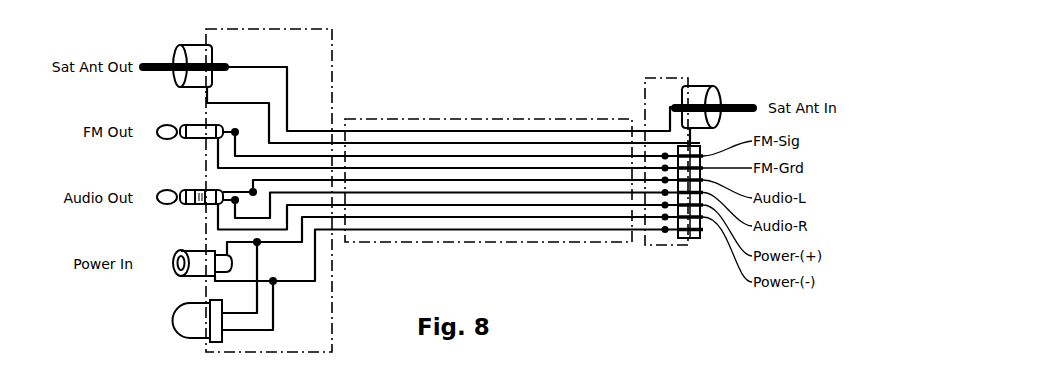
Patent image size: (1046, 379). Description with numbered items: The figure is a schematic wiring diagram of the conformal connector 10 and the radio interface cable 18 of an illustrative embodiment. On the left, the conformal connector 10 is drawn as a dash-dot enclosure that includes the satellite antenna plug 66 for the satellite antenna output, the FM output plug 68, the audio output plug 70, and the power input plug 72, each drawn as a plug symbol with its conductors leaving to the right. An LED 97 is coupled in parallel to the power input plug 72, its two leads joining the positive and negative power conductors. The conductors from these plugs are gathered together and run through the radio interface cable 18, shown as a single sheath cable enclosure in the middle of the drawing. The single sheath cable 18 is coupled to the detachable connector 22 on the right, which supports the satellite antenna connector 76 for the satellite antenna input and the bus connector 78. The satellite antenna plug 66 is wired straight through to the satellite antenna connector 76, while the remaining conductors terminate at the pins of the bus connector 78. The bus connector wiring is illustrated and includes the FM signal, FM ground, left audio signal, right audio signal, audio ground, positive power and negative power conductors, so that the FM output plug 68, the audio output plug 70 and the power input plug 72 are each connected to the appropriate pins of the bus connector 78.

The conformal connector 10 is at (332, 65).
The radio interface cable 18 is at (501, 118).
The detachable connector 22 is at (645, 102).
The satellite antenna plug 66 is at (183, 45).
The FM output plug 68 is at (183, 125).
The audio output plug 70 is at (183, 192).
The power input plug 72 is at (181, 251).
The satellite antenna connector 76 is at (720, 86).
The bus connector 78 is at (703, 233).
The LED 97 is at (180, 303).